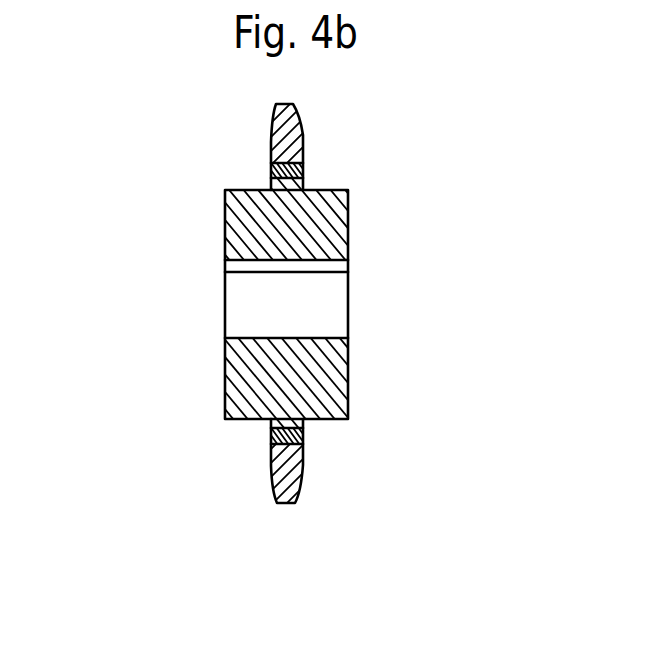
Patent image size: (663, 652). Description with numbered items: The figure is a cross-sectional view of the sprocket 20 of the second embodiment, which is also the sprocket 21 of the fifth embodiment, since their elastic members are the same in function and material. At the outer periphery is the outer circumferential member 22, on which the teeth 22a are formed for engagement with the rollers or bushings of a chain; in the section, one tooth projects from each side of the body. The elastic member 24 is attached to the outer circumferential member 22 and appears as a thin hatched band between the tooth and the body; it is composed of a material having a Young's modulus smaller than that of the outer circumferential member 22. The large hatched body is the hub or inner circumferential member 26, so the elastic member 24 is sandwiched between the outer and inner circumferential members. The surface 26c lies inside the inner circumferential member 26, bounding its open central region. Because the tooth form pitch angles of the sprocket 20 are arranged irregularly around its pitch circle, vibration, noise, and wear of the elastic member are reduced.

The sprocket 20 is at (300, 343).
The sprocket 21 is at (300, 343).
The outer circumferential member 22 is at (277, 297).
The teeth 22a is at (291, 121).
The elastic member 24 is at (293, 172).
The inner circumferential member 26 is at (337, 228).
The inner surface 26c is at (302, 338).